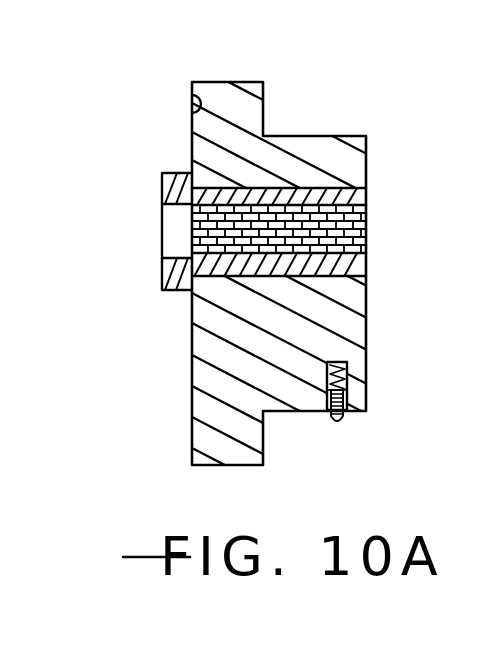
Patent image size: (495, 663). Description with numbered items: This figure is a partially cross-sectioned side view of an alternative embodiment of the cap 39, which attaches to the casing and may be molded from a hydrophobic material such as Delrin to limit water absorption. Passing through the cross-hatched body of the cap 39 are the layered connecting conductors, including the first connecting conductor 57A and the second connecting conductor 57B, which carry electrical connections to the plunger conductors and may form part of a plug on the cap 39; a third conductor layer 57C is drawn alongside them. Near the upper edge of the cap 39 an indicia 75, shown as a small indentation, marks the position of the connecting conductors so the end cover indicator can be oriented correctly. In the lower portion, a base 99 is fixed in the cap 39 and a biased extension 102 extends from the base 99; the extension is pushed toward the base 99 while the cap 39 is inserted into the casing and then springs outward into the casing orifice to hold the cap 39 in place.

The cap 39 is at (341, 136).
The indicia 75 is at (190, 103).
The first connecting conductor 57A is at (192, 253).
The second connecting conductor 57B is at (192, 236).
The third layer 57C is at (190, 212).
The base 99 is at (349, 378).
The biased extension 102 is at (343, 416).